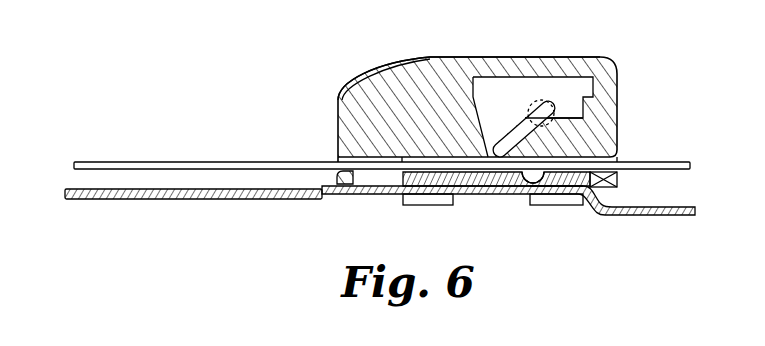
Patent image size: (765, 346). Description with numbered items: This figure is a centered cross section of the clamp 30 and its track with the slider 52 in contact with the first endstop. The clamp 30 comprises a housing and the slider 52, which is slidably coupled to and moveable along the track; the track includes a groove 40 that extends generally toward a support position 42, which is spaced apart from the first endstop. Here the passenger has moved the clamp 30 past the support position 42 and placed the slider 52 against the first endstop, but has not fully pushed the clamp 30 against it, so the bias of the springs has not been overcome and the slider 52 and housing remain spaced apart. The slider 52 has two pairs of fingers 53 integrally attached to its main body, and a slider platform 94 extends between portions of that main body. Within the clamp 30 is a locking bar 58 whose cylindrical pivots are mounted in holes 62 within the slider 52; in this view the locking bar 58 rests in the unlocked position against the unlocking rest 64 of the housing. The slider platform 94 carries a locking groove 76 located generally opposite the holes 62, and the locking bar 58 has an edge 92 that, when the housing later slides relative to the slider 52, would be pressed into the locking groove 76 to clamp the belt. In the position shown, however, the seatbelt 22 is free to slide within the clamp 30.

The seatbelt 22 is at (160, 162).
The clamp 30 is at (620, 92).
The groove 40 is at (64, 188).
The support position 42 is at (325, 198).
The slider 52 is at (469, 60).
The fingers 53 is at (408, 200).
The locking bar 58 is at (495, 110).
The holes 62 is at (535, 100).
The unlocking rest 64 is at (542, 133).
The locking groove 76 is at (542, 192).
The edge 92 is at (497, 168).
The slider platform 94 is at (508, 186).